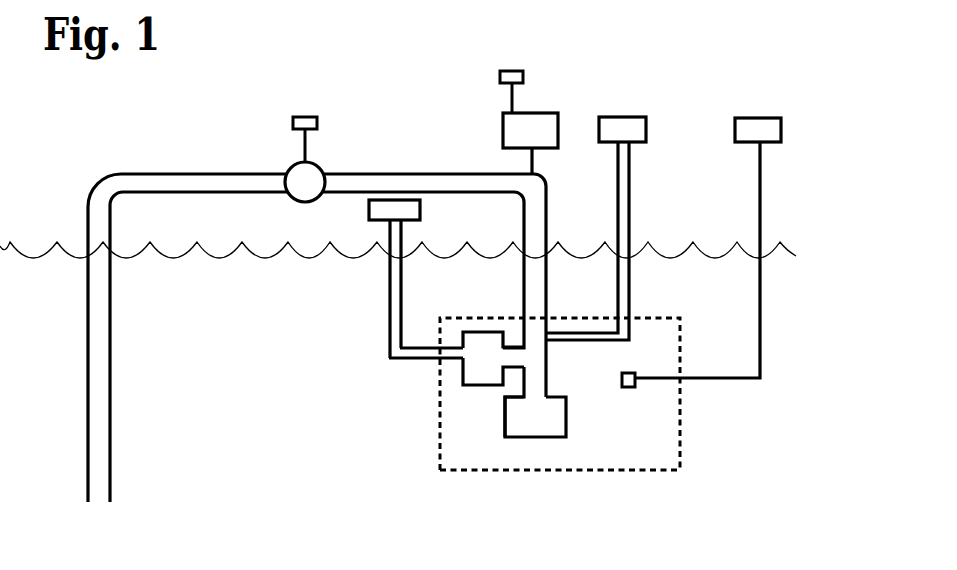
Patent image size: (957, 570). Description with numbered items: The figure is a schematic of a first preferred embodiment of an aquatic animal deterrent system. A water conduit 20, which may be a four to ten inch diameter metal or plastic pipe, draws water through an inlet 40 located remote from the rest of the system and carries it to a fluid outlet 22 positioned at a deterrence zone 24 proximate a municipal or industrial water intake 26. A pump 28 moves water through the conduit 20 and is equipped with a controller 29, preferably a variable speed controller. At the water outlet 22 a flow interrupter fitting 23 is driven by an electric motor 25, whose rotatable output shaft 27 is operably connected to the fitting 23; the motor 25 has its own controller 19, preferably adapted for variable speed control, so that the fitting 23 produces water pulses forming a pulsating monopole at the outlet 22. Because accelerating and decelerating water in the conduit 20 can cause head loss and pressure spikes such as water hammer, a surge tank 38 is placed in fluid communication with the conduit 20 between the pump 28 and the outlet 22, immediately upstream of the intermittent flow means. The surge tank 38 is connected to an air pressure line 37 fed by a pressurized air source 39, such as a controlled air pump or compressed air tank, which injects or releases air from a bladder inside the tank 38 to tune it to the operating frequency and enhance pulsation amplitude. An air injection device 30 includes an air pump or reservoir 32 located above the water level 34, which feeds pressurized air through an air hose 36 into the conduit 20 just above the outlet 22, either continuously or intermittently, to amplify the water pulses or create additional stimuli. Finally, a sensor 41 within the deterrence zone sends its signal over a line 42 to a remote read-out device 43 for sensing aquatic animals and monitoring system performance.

The controller 19 is at (510, 63).
The water conduit 20 is at (524, 272).
The fluid outlet 22 is at (503, 418).
The flow interrupter fitting 23 is at (527, 422).
The deterrence zone 24 is at (667, 432).
The electric motor 25 is at (523, 112).
The water intake 26 is at (623, 480).
The output shaft 27 is at (533, 163).
The pump 28 is at (320, 165).
The controller 29 is at (292, 123).
The air injection device 30 is at (647, 62).
The air pump or reservoir 32 is at (647, 138).
The water level 34 is at (28, 257).
The air hose 36 is at (632, 277).
The air pressure line 37 is at (412, 363).
The surge tank 38 is at (477, 332).
The pressurized air source 39 is at (420, 210).
The inlet 40 is at (98, 502).
The sensor 41 is at (627, 370).
The line 42 is at (762, 300).
The remote read-out device 43 is at (760, 117).